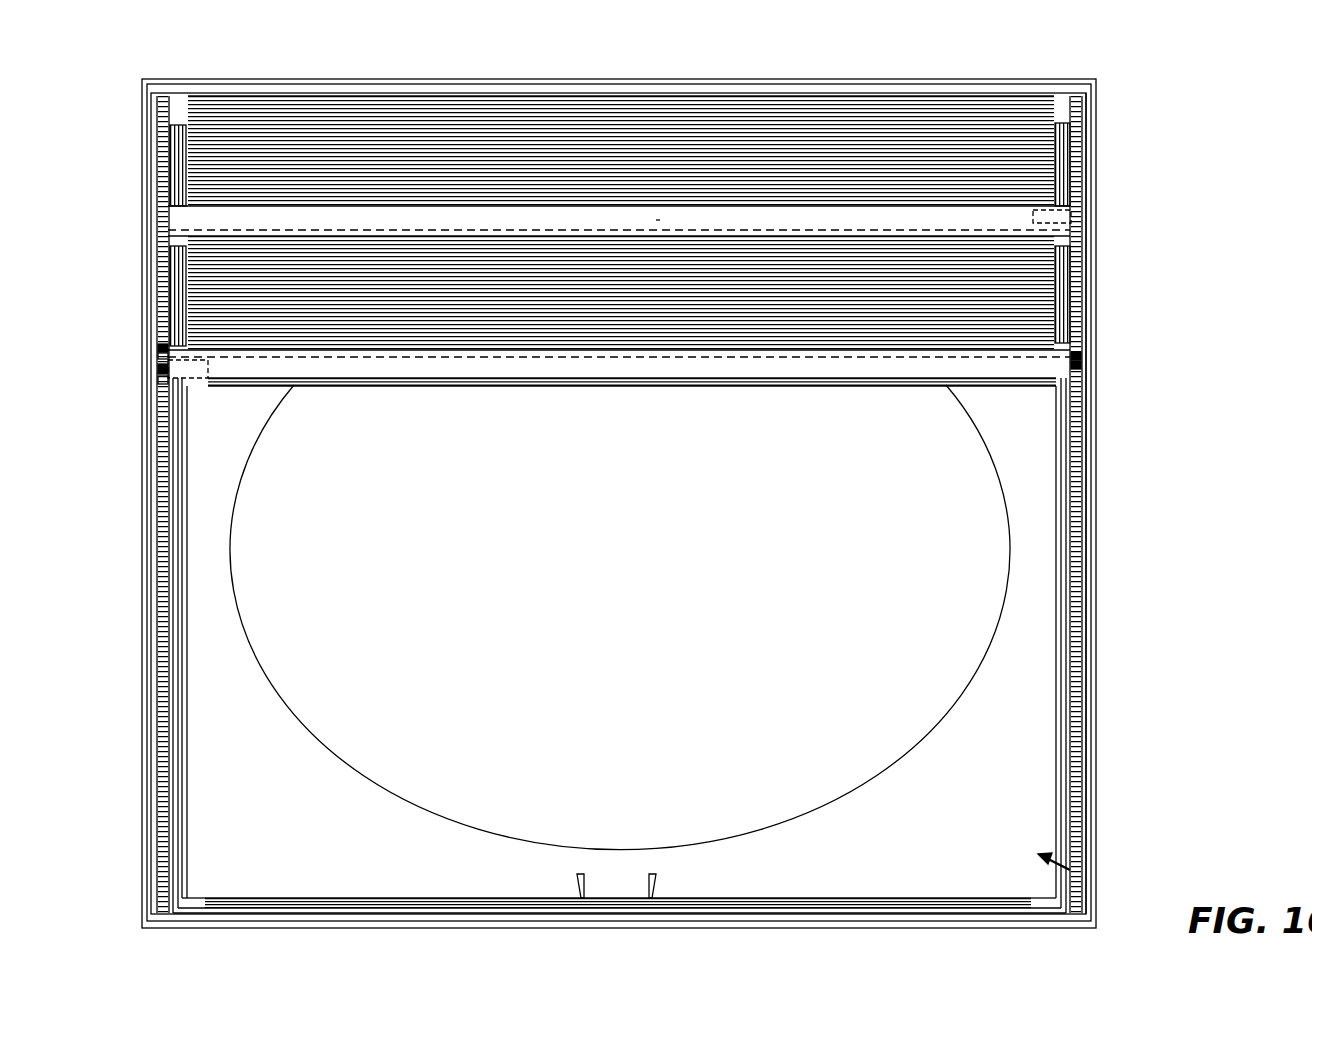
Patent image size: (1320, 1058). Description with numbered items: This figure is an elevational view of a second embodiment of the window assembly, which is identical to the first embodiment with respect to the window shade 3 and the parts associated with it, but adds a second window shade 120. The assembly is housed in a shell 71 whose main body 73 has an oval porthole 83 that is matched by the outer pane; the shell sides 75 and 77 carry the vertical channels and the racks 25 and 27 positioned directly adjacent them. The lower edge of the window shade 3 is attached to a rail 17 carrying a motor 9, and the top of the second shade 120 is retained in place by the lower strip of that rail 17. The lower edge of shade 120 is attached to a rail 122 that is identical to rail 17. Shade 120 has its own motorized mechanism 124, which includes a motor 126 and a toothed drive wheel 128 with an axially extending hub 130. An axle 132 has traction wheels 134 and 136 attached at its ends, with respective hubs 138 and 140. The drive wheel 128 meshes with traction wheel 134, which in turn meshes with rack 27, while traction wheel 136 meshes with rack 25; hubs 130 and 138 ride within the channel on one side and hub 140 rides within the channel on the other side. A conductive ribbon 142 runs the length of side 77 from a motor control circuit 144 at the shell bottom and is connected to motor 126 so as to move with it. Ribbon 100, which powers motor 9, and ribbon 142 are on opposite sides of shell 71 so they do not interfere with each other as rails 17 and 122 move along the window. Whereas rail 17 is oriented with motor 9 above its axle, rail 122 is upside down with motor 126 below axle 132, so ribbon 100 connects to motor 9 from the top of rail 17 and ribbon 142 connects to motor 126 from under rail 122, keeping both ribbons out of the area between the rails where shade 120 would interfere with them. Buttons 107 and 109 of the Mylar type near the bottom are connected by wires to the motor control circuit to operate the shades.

The window shade 3 is at (240, 147).
The motor 9 is at (1047, 209).
The rail 17 is at (650, 212).
The rack 25 is at (1065, 546).
The rack 27 is at (156, 580).
The shell 71 is at (1062, 862).
The main body 73 is at (287, 808).
The shell side 75 is at (1106, 680).
The shell side 77 is at (118, 668).
The porthole 83 is at (629, 732).
The ribbon 100 is at (1048, 788).
The button 107 is at (650, 875).
The button 109 is at (568, 875).
The second window shade 120 is at (222, 292).
The rail 122 is at (764, 362).
The motorized mechanism 124 is at (185, 391).
The motor 126 is at (190, 371).
The toothed drive wheel 128 is at (157, 372).
The hub 130 is at (157, 362).
The axle 132 is at (427, 352).
The traction wheel 134 is at (157, 340).
The traction wheel 136 is at (1068, 350).
The hub 138 is at (157, 349).
The hub 140 is at (1070, 356).
The conductive ribbon 142 is at (180, 706).
The motor control circuit 144 is at (350, 890).